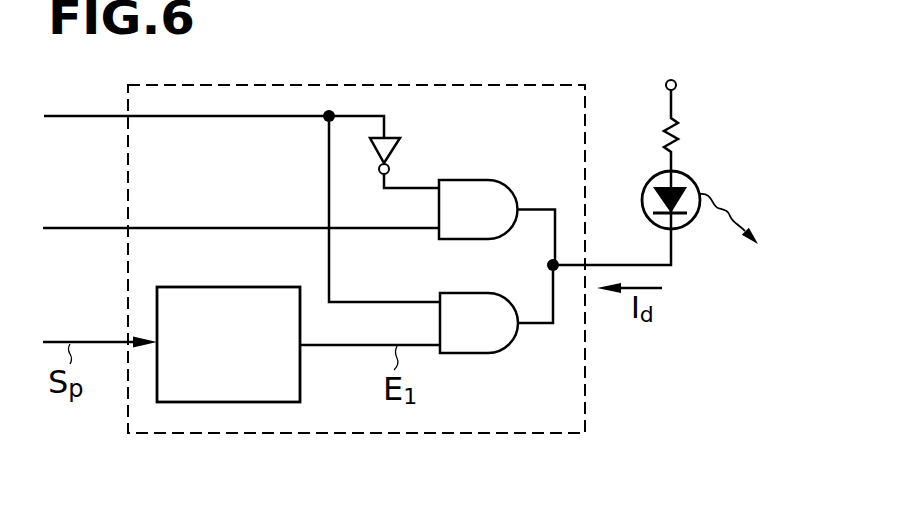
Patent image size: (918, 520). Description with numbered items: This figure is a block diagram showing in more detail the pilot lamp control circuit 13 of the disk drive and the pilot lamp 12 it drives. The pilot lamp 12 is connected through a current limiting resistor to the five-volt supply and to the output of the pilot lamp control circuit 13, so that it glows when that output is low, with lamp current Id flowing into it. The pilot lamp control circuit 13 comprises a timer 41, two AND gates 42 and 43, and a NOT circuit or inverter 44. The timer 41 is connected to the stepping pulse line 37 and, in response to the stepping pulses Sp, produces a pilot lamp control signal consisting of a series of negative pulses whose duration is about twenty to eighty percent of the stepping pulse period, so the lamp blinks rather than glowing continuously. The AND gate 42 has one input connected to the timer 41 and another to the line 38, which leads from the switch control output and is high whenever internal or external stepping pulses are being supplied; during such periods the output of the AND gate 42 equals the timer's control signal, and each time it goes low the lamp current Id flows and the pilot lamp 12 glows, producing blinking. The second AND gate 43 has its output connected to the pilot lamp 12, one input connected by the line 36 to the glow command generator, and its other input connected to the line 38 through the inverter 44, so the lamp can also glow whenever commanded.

The pilot lamp 12 is at (646, 180).
The pilot lamp control circuit 13 is at (585, 421).
The line 36 is at (70, 227).
The line 37 is at (62, 342).
The line 38 is at (70, 115).
The timer 41 is at (302, 380).
The AND gate 42 is at (466, 354).
The second AND gate 43 is at (483, 180).
The inverter 44 is at (398, 140).